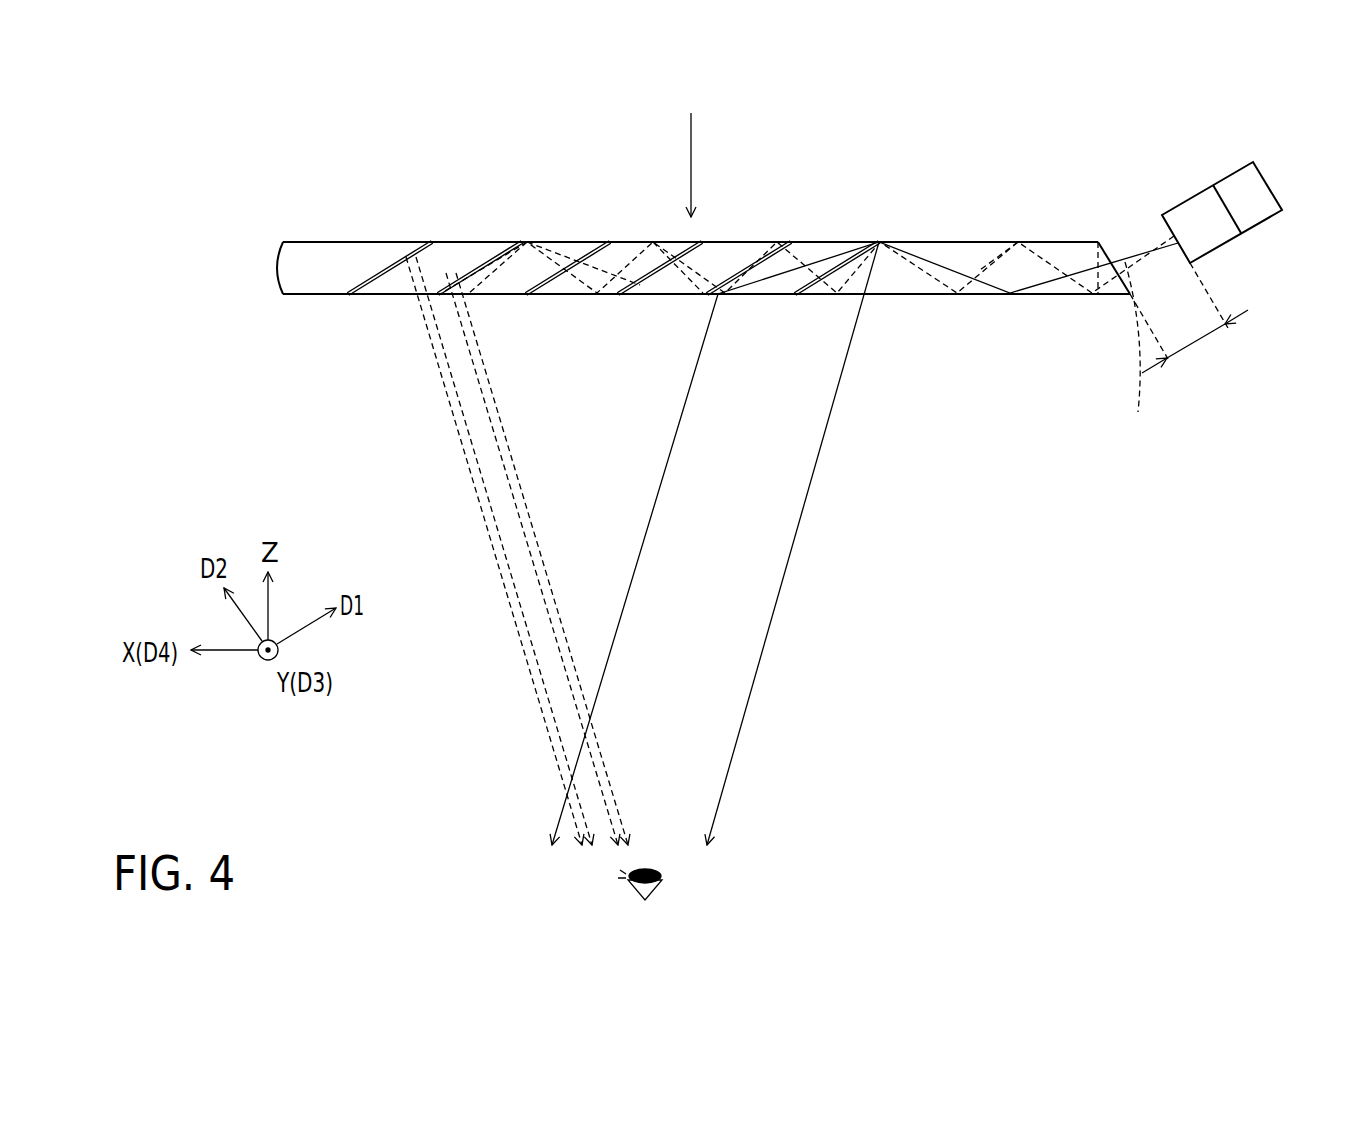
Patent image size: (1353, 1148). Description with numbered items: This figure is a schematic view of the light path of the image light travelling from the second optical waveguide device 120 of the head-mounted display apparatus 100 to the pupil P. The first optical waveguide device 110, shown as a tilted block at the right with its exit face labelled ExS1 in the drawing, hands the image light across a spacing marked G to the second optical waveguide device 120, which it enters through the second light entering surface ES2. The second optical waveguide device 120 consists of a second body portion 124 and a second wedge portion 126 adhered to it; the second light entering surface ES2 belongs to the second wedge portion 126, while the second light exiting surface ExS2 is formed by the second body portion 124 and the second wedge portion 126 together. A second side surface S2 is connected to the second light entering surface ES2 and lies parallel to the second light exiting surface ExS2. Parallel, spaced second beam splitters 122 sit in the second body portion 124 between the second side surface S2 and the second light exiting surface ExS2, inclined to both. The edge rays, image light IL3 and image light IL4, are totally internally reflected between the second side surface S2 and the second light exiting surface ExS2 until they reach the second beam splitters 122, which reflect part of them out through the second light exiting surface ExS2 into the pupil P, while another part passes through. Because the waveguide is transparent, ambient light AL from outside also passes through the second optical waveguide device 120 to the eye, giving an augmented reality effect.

The head-mounted display apparatus 100 is at (1207, 832).
The first optical waveguide device 110 is at (1253, 215).
The second optical waveguide device 120 is at (1080, 138).
The second beam splitters 122 is at (672, 247).
The second body portion 124 is at (1055, 253).
The second wedge portion 126 is at (1108, 252).
The ambient light AL is at (691, 170).
The second side surface S2 is at (916, 239).
The second light entering surface ES2 is at (1111, 246).
The exit surface of optical system ExS1 is at (1184, 259).
The second light exiting surface ExS2 is at (930, 297).
The image light IL3 is at (1053, 254).
The image light IL4 is at (410, 437).
The gap G is at (1189, 319).
The pupil P is at (650, 866).